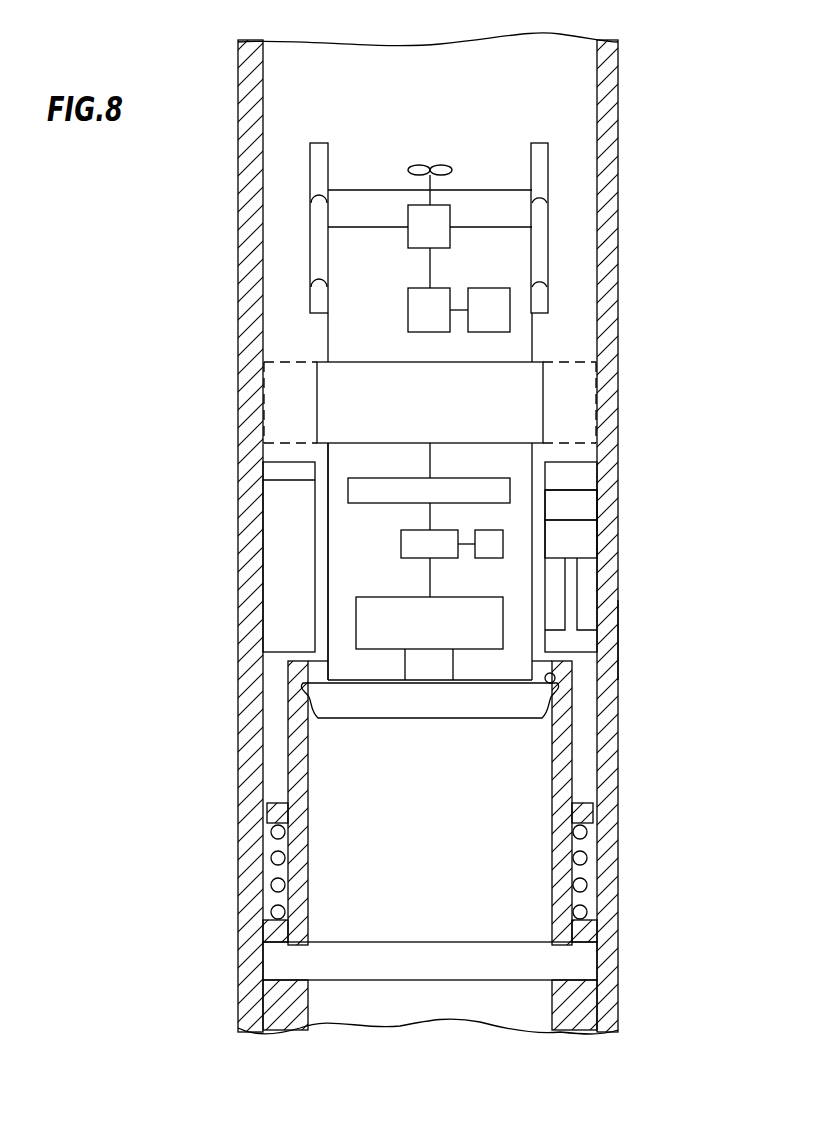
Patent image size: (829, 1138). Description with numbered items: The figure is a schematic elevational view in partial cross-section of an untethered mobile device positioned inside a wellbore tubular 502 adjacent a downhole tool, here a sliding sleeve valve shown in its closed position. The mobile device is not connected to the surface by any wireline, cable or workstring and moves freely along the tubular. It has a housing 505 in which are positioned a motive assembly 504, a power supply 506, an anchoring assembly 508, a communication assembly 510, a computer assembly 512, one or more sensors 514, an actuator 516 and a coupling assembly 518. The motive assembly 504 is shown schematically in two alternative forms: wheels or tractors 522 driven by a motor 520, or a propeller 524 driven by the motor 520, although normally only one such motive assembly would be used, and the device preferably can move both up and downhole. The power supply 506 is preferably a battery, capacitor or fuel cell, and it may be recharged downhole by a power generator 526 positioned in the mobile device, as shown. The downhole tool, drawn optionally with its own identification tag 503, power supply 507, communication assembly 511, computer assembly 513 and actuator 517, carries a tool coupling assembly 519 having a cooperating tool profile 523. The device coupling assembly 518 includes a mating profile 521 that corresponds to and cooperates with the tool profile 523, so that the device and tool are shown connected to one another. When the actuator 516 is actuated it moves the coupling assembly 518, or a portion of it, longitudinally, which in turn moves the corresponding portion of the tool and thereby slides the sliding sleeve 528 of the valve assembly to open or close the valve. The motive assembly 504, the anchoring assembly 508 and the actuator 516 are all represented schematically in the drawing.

The wellbore tubular 502 is at (620, 172).
The motive assembly 504 is at (283, 202).
The housing 505 is at (327, 525).
The wheels or tractors 522 is at (309, 270).
The propeller 524 is at (421, 166).
The motor 520 is at (408, 215).
The power supply 506 is at (408, 323).
The power generator 526 is at (512, 325).
The anchoring assembly 508 is at (317, 382).
The identification tag 503 is at (275, 472).
The sensors 514 is at (348, 492).
The computer assembly 512 is at (401, 546).
The communication assembly 510 is at (503, 544).
The actuator 516 is at (356, 622).
The communication assembly 511 is at (575, 478).
The computer assembly 513 is at (580, 508).
The power supply 507 is at (577, 549).
The actuator 517 is at (570, 587).
The tool coupling assembly 519 is at (630, 638).
The coupling assembly 518 is at (303, 680).
The mating profile 521 is at (553, 693).
The tool profile 523 is at (555, 680).
The sliding sleeve 528 is at (636, 794).